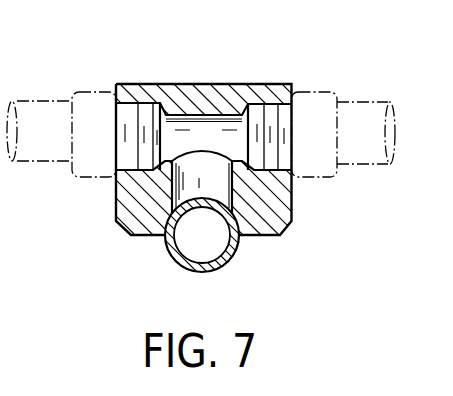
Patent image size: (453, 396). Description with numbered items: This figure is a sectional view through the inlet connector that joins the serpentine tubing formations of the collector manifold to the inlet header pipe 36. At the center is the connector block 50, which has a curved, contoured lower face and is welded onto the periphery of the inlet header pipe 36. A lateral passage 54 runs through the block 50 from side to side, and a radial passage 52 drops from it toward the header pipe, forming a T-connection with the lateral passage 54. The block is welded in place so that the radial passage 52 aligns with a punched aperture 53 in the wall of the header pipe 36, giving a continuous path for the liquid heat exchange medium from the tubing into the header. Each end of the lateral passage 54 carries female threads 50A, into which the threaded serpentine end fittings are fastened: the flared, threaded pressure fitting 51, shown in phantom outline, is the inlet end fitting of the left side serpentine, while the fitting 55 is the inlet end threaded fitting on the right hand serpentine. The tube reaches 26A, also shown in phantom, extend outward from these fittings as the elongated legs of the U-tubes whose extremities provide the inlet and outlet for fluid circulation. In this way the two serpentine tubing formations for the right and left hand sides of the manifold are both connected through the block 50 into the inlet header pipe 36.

The connector block 50 is at (189, 83).
The female threads 50A is at (257, 112).
The flared, threaded pressure fitting 51 is at (102, 103).
The threaded fitting 55 is at (317, 105).
The reach of U-tube 26A is at (33, 120).
The lateral passage 54 is at (208, 135).
The radial passage 52 is at (213, 178).
The punched aperture 53 is at (202, 207).
The inlet header pipe 36 is at (177, 260).